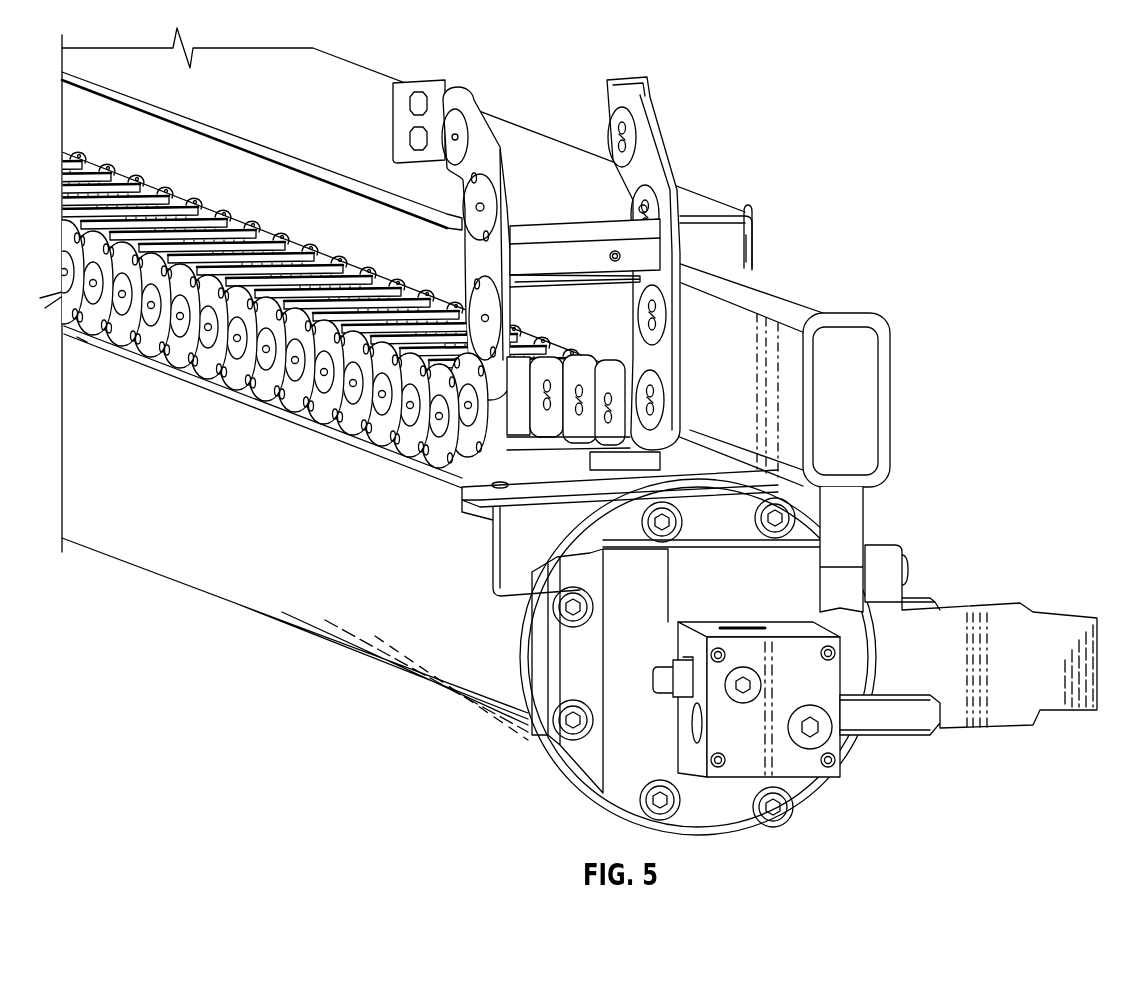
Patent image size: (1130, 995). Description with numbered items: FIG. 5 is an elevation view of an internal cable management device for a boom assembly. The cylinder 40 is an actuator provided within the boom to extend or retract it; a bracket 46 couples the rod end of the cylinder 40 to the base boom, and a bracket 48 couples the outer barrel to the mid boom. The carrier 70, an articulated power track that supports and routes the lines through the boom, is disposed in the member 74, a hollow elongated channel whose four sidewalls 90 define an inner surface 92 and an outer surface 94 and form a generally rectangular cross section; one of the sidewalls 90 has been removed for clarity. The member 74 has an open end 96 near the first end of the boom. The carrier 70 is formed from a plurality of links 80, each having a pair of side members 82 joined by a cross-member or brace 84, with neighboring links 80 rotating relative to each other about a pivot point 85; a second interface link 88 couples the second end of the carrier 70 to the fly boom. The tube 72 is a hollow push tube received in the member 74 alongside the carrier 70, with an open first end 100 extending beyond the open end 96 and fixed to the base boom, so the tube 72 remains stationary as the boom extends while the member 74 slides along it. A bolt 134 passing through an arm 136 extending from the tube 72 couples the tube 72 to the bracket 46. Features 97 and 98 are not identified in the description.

The cylinder 40 is at (282, 606).
The bracket 46 is at (1005, 606).
The bracket 48 is at (558, 768).
The carrier 70 is at (682, 367).
The tube 72 is at (888, 405).
The member 74 is at (750, 218).
The links 80 is at (664, 402).
The side members 82 is at (477, 240).
The cross-member 84 is at (573, 247).
The pivot point 85 is at (478, 206).
The second interface link 88 is at (467, 88).
The sidewalls 90 is at (752, 248).
The inner surface 92 is at (470, 477).
The outer surface 94 is at (360, 88).
The open end 96 is at (778, 206).
The guide rail 97 is at (720, 213).
The bracket 98 is at (500, 505).
The open first end 100 is at (781, 362).
The bolt 134 is at (858, 510).
The arm 136 is at (908, 563).